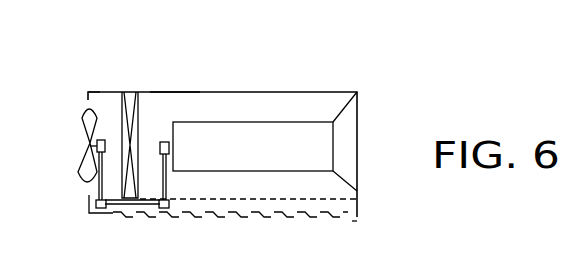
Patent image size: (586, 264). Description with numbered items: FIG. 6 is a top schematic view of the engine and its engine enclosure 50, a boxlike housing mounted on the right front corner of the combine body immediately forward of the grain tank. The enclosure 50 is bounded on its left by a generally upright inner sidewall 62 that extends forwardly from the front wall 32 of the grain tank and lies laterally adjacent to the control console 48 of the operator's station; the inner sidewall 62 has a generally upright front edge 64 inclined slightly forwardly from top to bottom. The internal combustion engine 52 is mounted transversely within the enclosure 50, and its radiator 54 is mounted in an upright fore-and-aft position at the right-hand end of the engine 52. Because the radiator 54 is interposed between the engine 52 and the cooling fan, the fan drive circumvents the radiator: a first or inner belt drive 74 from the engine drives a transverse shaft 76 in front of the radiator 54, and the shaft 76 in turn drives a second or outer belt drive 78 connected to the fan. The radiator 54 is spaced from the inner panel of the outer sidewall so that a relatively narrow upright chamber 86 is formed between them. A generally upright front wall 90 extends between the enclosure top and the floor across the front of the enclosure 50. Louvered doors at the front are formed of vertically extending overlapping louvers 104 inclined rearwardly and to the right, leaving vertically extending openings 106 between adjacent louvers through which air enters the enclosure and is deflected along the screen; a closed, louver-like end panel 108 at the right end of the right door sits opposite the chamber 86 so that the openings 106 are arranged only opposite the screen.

The front wall 32 is at (170, 92).
The control console 48 is at (235, 199).
The engine enclosure 50 is at (251, 73).
The internal combustion engine 52 is at (261, 153).
The radiator 54 is at (138, 133).
The inner sidewall 62 is at (358, 98).
The front edge 64 is at (86, 97).
The inner belt drive 74 is at (167, 186).
The transverse shaft 76 is at (113, 208).
The outer belt drive 78 is at (88, 191).
The upright chamber 86 is at (107, 103).
The front wall 90 is at (362, 227).
The louvers 104 is at (218, 214).
The louver openings 106 is at (180, 214).
The end panel 108 is at (128, 212).